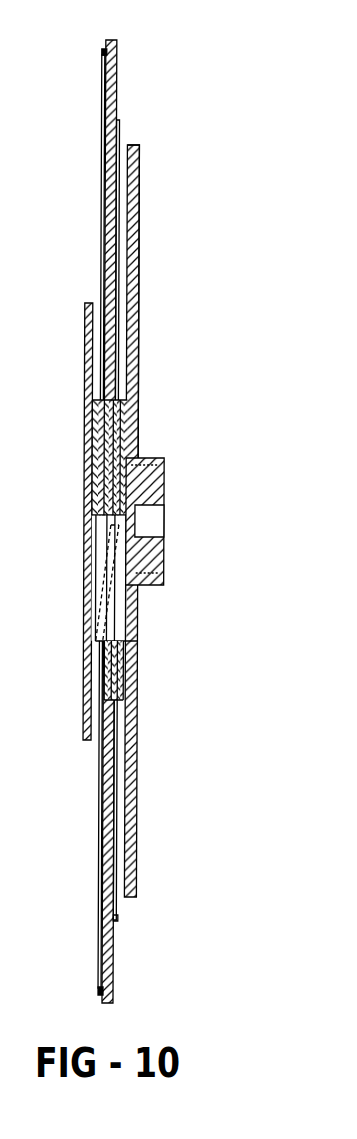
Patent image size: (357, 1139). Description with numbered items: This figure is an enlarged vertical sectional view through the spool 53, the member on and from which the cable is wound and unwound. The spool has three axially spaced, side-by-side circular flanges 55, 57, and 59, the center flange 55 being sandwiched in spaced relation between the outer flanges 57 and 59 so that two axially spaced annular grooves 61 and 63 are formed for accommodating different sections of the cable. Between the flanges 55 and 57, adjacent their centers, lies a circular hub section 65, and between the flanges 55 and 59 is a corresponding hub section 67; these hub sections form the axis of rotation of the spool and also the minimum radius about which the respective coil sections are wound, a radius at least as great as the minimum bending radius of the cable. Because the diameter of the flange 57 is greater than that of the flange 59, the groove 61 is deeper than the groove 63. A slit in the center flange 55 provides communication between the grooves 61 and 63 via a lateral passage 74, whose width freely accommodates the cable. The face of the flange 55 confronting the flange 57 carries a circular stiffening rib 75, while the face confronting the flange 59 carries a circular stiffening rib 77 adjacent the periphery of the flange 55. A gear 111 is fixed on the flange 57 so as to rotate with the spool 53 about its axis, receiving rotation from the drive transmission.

The spool 53 is at (121, 514).
The circular flange 55 is at (117, 70).
The circular flange 57 is at (141, 256).
The circular flange 59 is at (86, 348).
The annular groove 61 is at (123, 172).
The annular groove 63 is at (99, 311).
The hub section 65 is at (118, 437).
The hub section 67 is at (87, 413).
The lateral passage 74 is at (121, 533).
The circular stiffening rib 75 is at (120, 121).
The circular stiffening rib 77 is at (103, 51).
The gear 111 is at (163, 459).